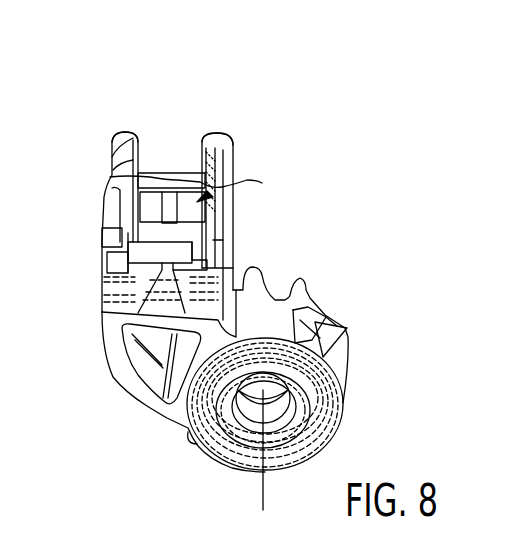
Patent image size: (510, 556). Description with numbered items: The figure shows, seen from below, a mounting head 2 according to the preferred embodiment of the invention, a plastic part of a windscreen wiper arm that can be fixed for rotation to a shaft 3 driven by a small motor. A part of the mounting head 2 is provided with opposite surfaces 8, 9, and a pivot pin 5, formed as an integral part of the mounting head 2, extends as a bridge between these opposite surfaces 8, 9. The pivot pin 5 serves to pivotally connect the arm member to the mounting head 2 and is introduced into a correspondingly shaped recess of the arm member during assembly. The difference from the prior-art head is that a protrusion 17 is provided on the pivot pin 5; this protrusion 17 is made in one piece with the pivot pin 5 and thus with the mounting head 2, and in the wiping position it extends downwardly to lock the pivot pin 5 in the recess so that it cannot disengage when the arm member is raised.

The mounting head 2 is at (305, 232).
The shaft 3 is at (263, 490).
The pivot pin 5 is at (110, 177).
The opposite surface 8 is at (140, 145).
The opposite surface 9 is at (200, 143).
The protrusion 17 is at (205, 197).